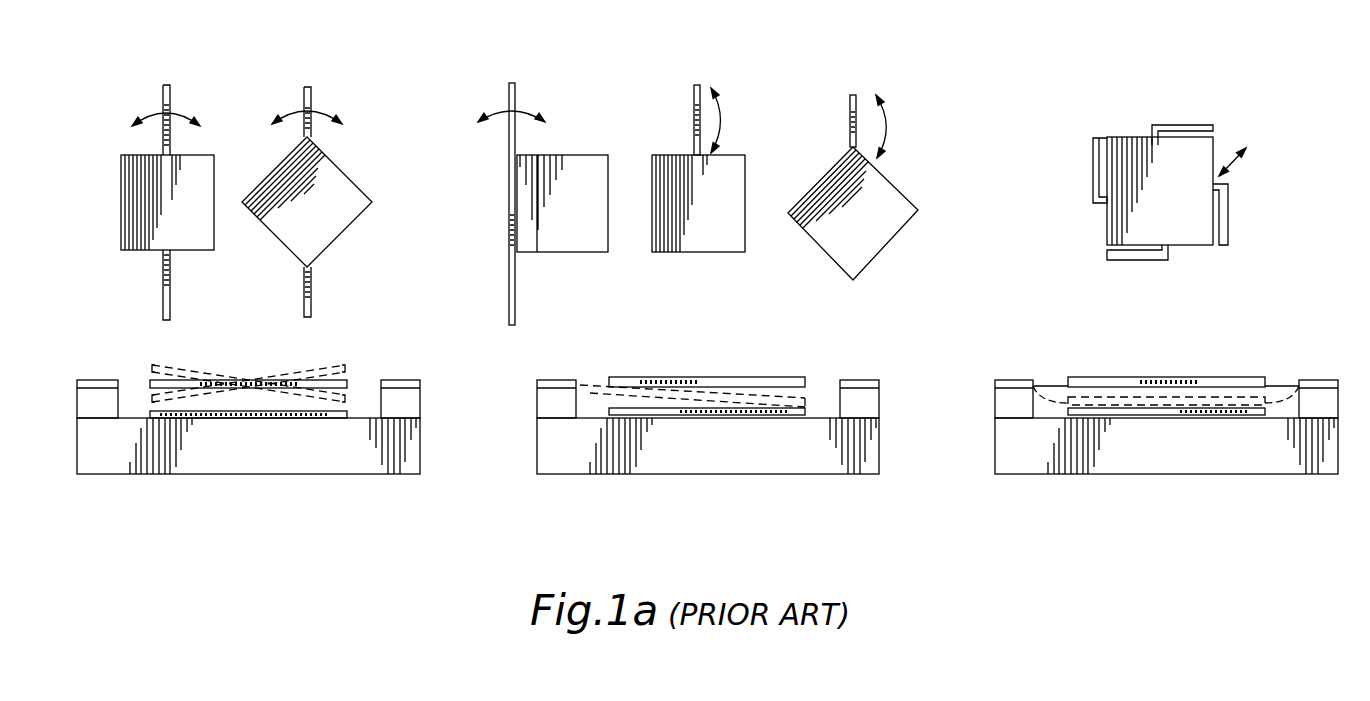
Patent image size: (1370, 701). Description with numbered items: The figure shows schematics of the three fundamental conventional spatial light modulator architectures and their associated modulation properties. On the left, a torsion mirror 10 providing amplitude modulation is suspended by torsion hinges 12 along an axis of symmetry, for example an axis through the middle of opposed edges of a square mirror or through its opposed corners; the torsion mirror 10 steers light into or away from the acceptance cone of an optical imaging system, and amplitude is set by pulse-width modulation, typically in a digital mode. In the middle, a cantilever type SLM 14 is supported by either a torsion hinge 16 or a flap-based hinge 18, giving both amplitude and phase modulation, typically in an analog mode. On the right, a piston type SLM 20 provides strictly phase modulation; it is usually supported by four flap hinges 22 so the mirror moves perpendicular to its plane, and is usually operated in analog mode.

The torsion mirror 10 is at (202, 153).
The torsion hinges 12 is at (170, 93).
The cantilever type SLM 14 is at (550, 152).
The torsion hinge 16 is at (516, 88).
The flap-based hinge 18 is at (852, 108).
The piston type SLM 20 is at (1230, 136).
The flap hinges 22 is at (1153, 126).